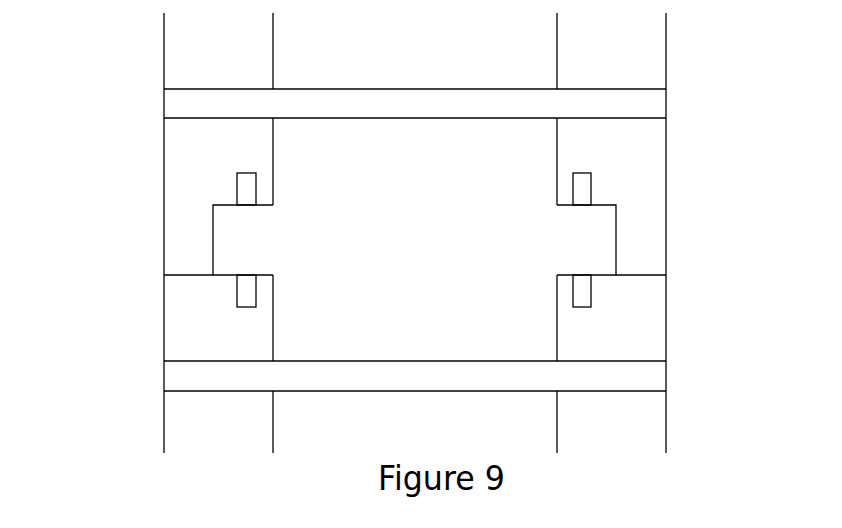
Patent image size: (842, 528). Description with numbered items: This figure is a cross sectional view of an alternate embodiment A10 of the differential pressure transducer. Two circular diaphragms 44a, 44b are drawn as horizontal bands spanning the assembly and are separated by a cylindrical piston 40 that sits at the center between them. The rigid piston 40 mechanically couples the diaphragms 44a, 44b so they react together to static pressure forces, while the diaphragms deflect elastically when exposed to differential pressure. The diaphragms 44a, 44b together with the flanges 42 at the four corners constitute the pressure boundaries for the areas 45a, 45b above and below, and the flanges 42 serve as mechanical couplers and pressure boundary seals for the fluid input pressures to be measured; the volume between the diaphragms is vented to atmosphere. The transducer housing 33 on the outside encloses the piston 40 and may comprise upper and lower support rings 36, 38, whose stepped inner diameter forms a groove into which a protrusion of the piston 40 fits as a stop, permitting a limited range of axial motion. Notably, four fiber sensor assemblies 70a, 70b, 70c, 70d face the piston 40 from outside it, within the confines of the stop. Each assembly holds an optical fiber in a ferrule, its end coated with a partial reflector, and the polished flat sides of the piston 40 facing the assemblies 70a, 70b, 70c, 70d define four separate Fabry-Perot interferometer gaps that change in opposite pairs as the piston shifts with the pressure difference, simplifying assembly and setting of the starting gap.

The alternate embodiment A10 is at (155, 52).
The transducer housing 33 is at (666, 265).
The upper support ring 36 is at (227, 335).
The lower support ring 38 is at (165, 157).
The piston 40 is at (435, 263).
The flanges 42 is at (232, 61).
The diaphragm 44a is at (666, 103).
The diaphragm 44b is at (666, 375).
The area 45a is at (456, 68).
The area 45b is at (443, 435).
The fiber sensor assembly 70a is at (247, 187).
The fiber sensor assembly 70b is at (242, 292).
The fiber sensor assembly 70c is at (591, 189).
The fiber sensor assembly 70d is at (592, 287).